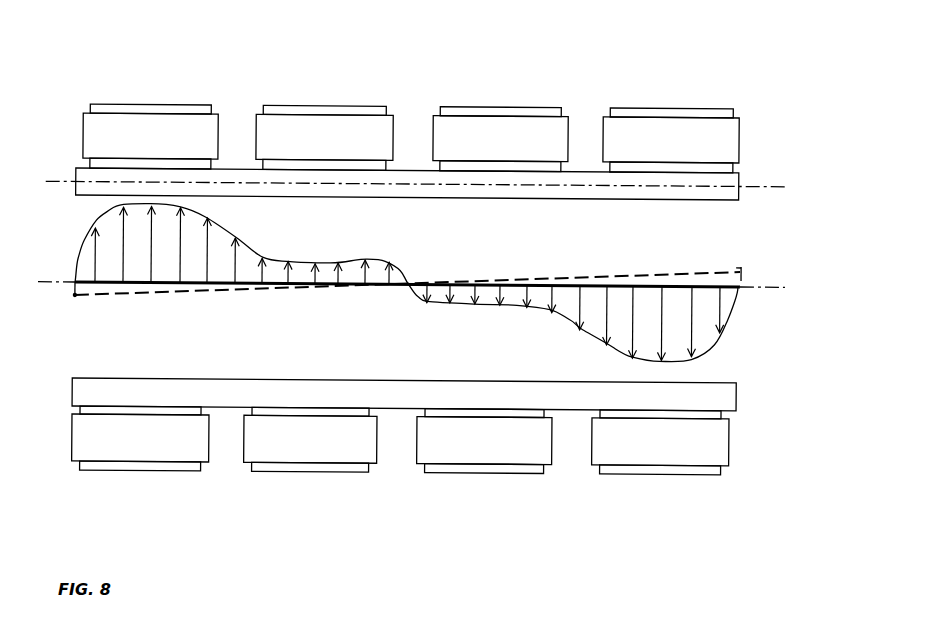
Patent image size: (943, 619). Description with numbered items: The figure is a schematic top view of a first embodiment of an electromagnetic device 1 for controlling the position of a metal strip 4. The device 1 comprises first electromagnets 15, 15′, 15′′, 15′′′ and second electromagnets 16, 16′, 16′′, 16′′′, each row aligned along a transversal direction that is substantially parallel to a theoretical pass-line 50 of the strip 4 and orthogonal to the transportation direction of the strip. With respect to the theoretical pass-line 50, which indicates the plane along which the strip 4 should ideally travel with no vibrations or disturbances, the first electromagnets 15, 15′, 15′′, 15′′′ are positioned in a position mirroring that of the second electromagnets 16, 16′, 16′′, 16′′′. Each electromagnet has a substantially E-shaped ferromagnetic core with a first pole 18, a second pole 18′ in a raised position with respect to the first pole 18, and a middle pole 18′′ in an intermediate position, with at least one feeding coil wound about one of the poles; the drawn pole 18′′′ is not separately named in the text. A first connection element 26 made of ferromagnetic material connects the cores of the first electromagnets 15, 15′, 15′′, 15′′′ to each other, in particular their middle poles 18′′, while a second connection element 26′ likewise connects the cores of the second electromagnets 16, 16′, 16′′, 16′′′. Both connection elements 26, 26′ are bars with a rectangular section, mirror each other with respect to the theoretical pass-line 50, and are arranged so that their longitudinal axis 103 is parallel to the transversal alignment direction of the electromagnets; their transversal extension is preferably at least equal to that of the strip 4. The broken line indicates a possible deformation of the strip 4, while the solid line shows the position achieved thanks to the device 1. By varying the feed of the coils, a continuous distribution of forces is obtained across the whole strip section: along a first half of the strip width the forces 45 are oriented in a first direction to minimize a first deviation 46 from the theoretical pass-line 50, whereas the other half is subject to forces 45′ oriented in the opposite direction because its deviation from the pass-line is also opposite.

The electromagnetic device 1 is at (431, 281).
The longitudinal axis 103 is at (763, 172).
The first electromagnet 15 is at (630, 133).
The first electromagnet 15′ is at (472, 133).
The first electromagnet 15′′ is at (297, 137).
The first electromagnet 15′′′ is at (122, 135).
The first pole 18 is at (635, 408).
The second pole 18′ is at (442, 409).
The middle pole 18′′ is at (166, 165).
The contact layer 18′′′ is at (165, 410).
The second electromagnet 16 is at (658, 433).
The second electromagnet 16′ is at (502, 433).
The second electromagnet 16′′ is at (310, 435).
The second electromagnet 16′′′ is at (150, 433).
The first connection element 26 is at (693, 188).
The second connection element 26′ is at (703, 388).
The theoretical pass-line 50 is at (787, 268).
The metal strip 4 is at (610, 265).
The first deviation 46 is at (83, 295).
The forces 45′ is at (85, 261).
The forces 45 is at (702, 328).